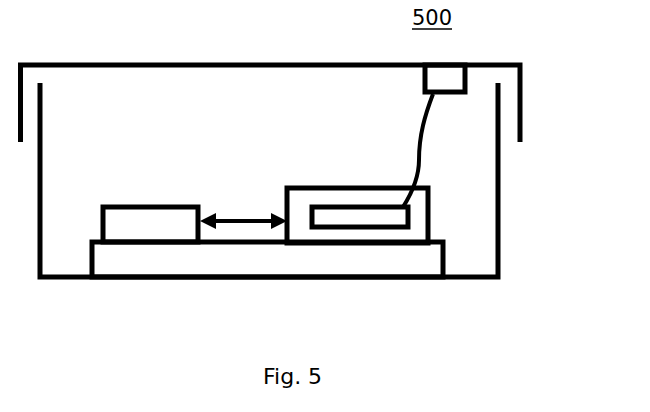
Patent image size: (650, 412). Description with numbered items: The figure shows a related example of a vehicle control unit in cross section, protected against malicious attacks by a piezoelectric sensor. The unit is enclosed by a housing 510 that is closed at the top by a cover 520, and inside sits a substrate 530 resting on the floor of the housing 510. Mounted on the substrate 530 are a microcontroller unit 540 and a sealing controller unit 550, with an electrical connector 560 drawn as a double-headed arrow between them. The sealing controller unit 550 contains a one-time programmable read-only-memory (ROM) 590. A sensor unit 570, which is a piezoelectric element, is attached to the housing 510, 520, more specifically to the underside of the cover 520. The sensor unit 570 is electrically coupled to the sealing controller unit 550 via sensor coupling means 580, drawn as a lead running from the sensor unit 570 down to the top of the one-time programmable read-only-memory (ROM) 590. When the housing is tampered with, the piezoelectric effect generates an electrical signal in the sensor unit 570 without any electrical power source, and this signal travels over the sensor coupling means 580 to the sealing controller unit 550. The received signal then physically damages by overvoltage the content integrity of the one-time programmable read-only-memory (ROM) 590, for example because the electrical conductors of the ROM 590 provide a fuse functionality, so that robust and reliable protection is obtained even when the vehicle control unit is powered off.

The housing 510 is at (500, 278).
The cover 520 is at (110, 63).
The substrate 530 is at (93, 242).
The microcontroller unit 540 is at (158, 205).
The sealing controller unit 550 is at (432, 218).
The electrical connector 560 is at (242, 213).
The sensor unit 570 is at (422, 78).
The sensor coupling means 580 is at (415, 170).
The one-time programmable read-only-memory (ROM) 590 is at (312, 207).